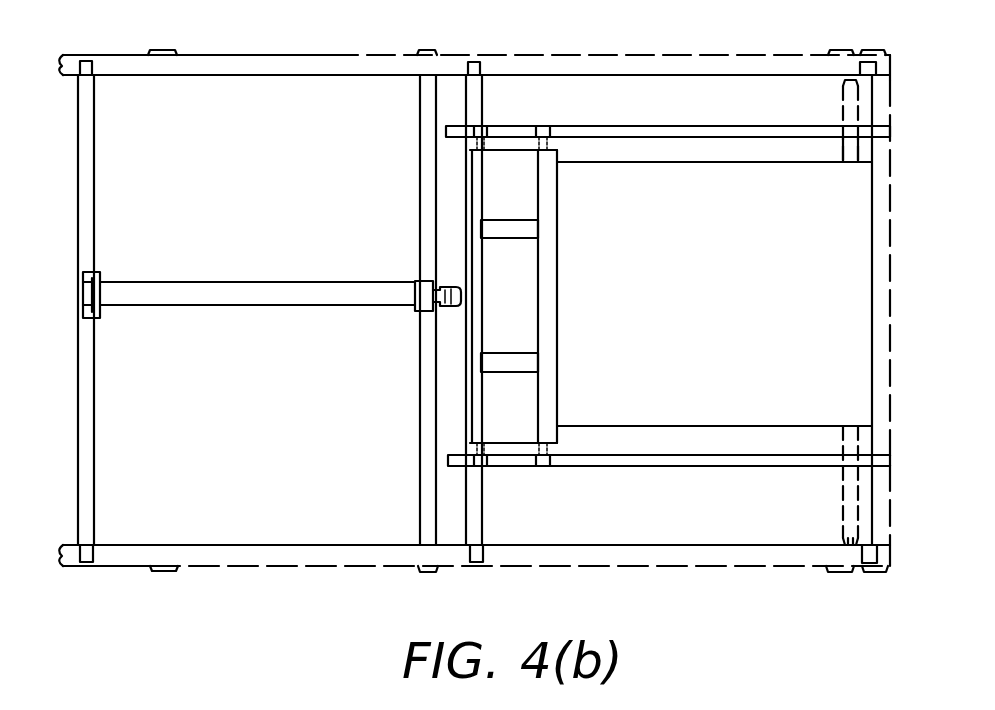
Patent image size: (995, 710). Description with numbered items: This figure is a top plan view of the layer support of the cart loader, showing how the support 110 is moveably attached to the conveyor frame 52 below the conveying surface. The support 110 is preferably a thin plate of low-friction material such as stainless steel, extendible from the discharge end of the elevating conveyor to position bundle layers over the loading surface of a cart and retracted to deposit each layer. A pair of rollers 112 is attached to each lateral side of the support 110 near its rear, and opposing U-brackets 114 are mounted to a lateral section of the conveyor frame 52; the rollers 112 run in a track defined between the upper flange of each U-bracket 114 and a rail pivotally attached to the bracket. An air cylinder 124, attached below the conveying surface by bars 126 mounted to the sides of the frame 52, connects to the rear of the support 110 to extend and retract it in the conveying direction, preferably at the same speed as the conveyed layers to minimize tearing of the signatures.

The conveyor frame 52 is at (325, 62).
The bars 126 is at (92, 151).
The air cylinder 124 is at (246, 282).
The U-brackets 114 is at (688, 126).
The rollers 112 is at (480, 128).
The support 110 is at (740, 302).